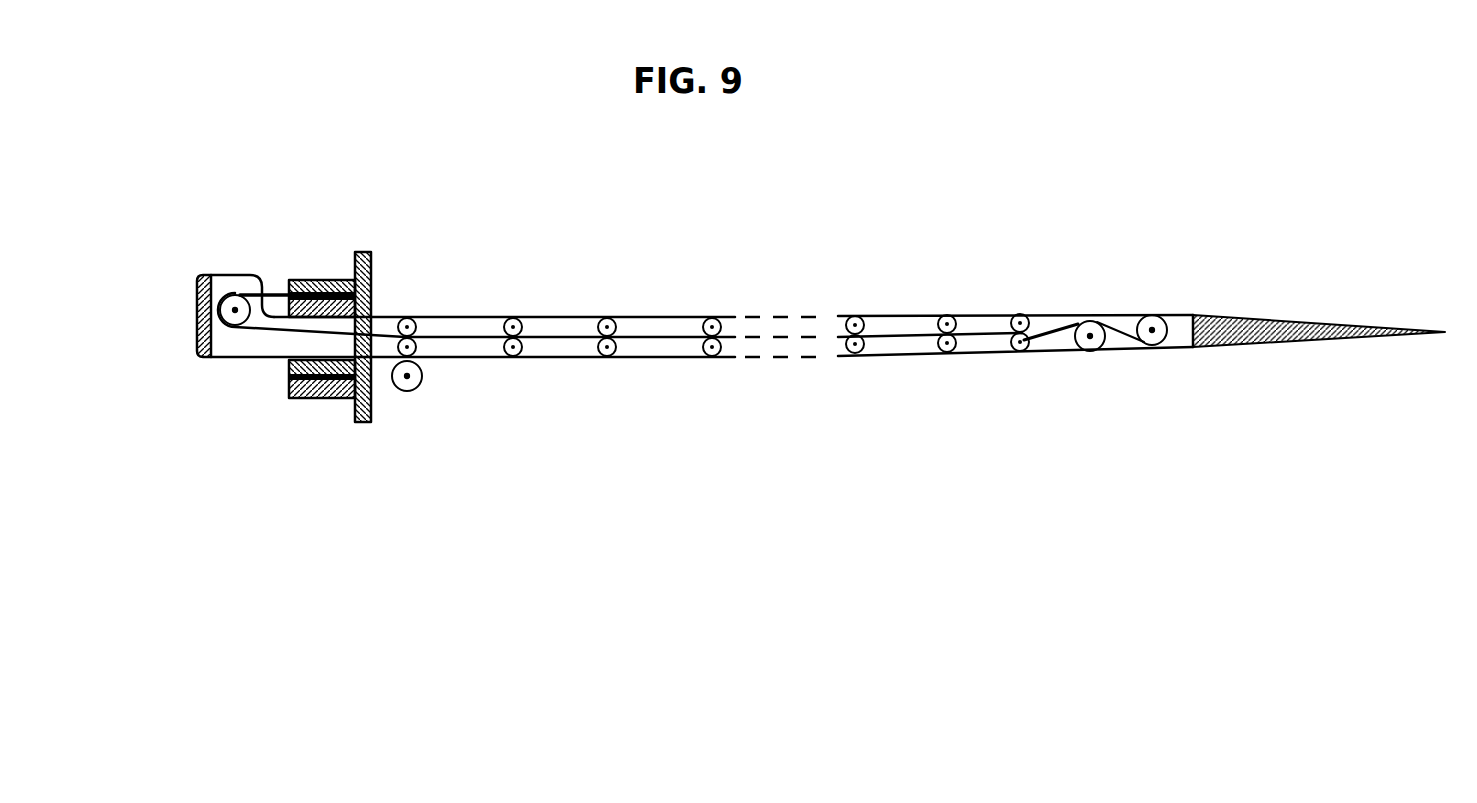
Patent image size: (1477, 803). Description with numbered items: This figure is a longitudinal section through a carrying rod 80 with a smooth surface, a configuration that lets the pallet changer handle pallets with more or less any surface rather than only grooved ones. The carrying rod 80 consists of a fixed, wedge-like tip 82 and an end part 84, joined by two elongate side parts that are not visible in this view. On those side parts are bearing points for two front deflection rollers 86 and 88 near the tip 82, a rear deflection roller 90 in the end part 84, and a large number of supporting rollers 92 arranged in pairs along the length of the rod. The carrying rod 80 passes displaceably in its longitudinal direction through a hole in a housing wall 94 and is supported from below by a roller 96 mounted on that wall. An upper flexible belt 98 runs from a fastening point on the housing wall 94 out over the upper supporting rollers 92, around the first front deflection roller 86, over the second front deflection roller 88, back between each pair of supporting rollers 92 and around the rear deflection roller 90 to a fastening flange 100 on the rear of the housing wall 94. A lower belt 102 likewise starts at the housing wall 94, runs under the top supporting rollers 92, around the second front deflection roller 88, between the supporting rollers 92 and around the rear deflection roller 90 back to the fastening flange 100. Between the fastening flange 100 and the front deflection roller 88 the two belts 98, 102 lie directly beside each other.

The carrying rod 80 is at (1043, 164).
The wedge-like tip 82 is at (1305, 334).
The end part 84 is at (204, 294).
The first front deflection roller 86 is at (1157, 346).
The second front deflection roller 88 is at (1093, 322).
The rear deflection roller 90 is at (235, 308).
The supporting rollers 92 is at (513, 318).
The housing wall 94 is at (374, 262).
The roller 96 is at (404, 392).
The upper flexible belt 98 is at (627, 315).
The fastening flange 100 is at (340, 283).
The lower belt 102 is at (558, 358).